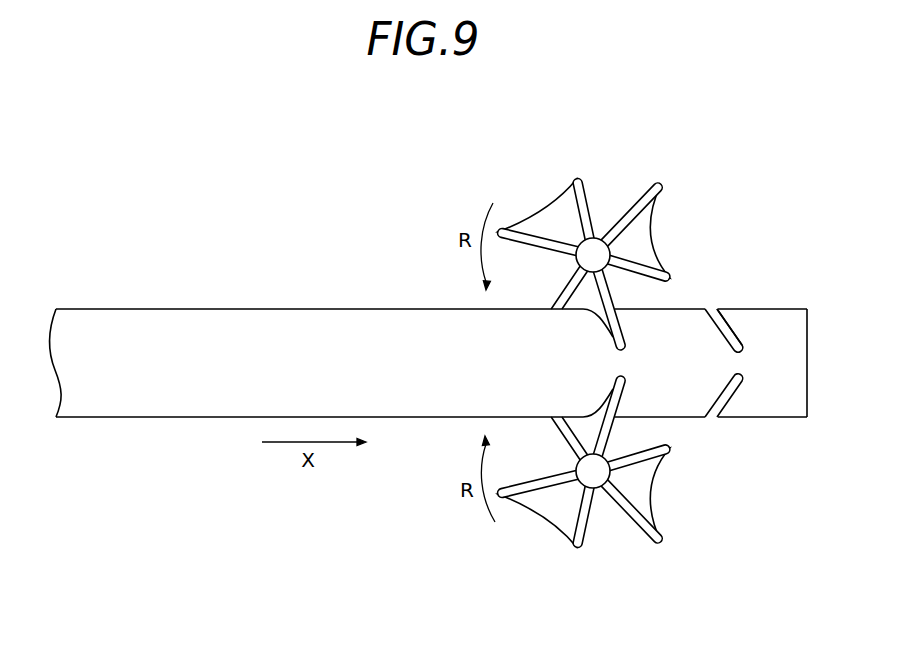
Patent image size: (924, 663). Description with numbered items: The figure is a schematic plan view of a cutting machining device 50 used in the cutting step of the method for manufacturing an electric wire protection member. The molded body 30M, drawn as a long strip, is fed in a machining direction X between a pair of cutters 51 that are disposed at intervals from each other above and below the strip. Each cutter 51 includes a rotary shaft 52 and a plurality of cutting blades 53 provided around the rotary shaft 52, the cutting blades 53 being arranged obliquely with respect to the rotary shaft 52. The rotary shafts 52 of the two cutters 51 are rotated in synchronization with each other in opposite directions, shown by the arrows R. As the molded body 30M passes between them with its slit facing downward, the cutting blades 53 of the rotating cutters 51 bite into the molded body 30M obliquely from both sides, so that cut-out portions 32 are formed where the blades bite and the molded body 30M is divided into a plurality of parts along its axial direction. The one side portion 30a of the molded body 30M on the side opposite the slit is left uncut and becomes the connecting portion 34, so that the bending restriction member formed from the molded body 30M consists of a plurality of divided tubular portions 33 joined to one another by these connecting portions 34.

The molded body 30M is at (323, 298).
The one side portion 30a is at (797, 382).
The cut-out portion 32 is at (723, 325).
The divided tubular portion 33 is at (677, 340).
The connecting portion 34 is at (742, 362).
The cutting machining device 50 is at (608, 357).
The cutter 51 is at (562, 173).
The rotary shaft 52 is at (597, 250).
The cutting blade 53 is at (548, 200).